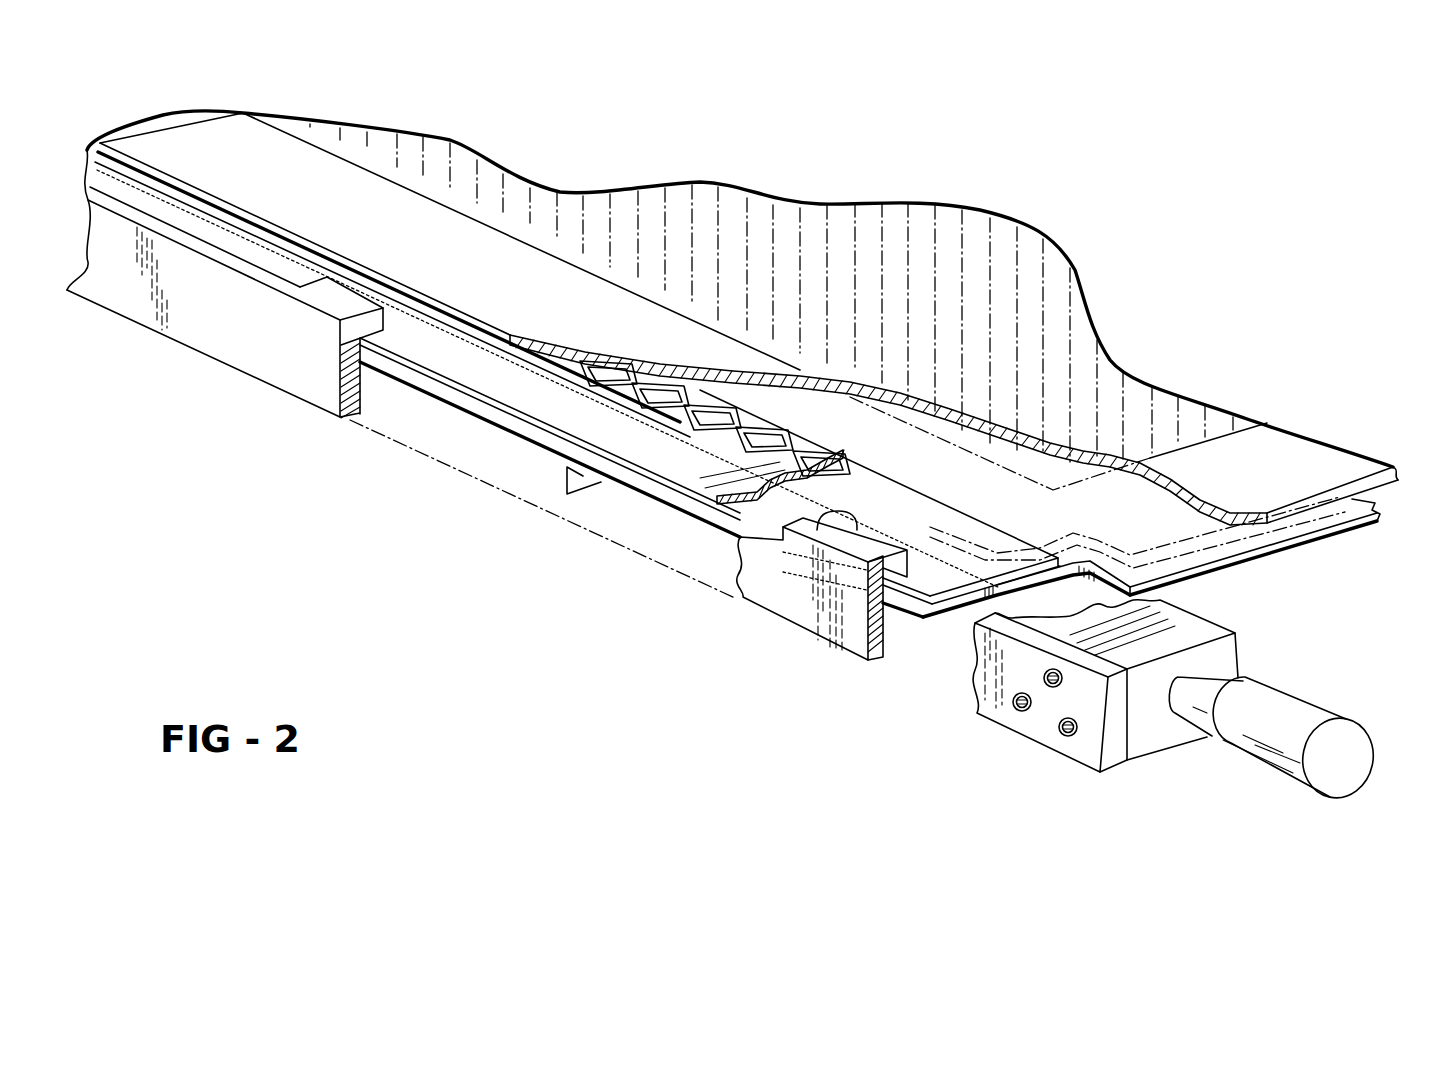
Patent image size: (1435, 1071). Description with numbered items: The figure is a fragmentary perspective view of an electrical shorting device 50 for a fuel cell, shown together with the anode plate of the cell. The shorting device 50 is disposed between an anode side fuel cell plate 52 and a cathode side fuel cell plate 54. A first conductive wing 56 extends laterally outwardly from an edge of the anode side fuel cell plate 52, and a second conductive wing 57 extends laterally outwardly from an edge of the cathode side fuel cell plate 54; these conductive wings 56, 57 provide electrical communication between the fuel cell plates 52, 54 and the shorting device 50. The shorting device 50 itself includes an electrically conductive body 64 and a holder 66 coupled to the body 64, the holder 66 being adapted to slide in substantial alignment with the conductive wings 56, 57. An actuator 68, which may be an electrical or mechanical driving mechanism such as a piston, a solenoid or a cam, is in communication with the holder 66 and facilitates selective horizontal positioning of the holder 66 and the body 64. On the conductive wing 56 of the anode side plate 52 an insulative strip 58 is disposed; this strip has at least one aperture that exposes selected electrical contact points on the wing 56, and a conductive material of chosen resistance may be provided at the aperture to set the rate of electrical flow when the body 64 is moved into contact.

The electrical shorting device 50 is at (1251, 636).
The anode side fuel cell plate 52 is at (1313, 460).
The cathode side fuel cell plate 54 is at (1293, 538).
The first conductive wing 56 is at (545, 300).
The second conductive wing 57 is at (1027, 585).
The insulative strip 58 is at (607, 362).
The electrically conductive body 64 is at (565, 482).
The holder 66 is at (777, 597).
The actuator 68 is at (1257, 748).